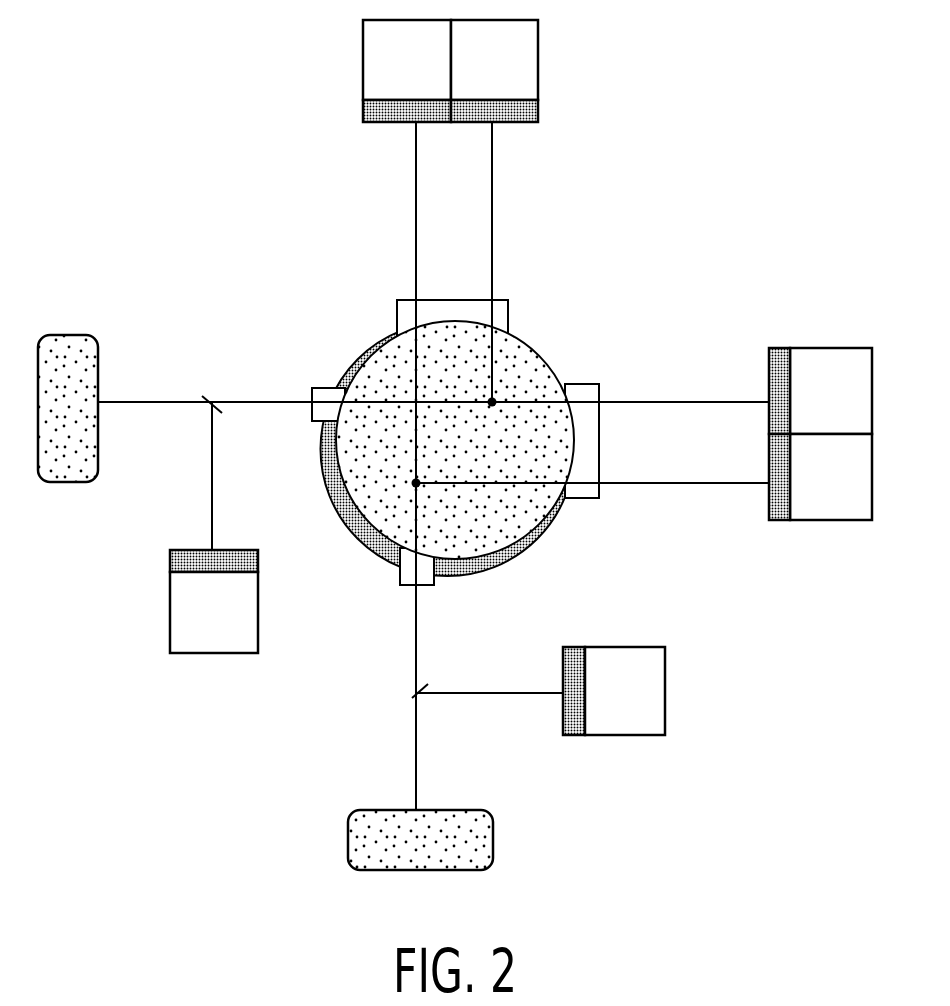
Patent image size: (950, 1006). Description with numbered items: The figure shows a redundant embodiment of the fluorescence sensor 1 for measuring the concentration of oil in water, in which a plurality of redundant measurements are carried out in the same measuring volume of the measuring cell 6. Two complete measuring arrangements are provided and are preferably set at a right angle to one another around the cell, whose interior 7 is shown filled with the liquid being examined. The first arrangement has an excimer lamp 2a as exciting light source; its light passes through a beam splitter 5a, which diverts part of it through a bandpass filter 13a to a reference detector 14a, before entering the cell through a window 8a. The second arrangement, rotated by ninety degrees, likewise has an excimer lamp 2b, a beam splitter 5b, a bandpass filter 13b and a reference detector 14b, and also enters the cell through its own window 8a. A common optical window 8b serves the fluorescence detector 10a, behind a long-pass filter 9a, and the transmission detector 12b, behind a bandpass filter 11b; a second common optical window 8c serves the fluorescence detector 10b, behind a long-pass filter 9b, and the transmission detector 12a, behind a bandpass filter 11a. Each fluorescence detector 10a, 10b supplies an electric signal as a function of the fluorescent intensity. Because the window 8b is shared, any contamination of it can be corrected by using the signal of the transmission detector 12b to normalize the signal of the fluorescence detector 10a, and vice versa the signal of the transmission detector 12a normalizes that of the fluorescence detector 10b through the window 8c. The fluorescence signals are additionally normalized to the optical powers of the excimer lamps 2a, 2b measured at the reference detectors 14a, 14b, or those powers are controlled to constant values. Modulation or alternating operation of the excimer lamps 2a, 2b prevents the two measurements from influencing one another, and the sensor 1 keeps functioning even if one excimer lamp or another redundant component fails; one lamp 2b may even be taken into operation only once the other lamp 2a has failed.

The fluorescence sensor 1 is at (267, 213).
The excimer lamp 2a is at (73, 338).
The excimer lamp 2b is at (417, 868).
The beam splitter 5a is at (207, 398).
The beam splitter 5b is at (410, 703).
The measuring cell 6 is at (345, 347).
The core 7 is at (539, 360).
The terminal 8a is at (313, 417).
The common optical window 8b is at (427, 307).
The common optical window 8c is at (592, 425).
The long-pass filter 9a is at (516, 122).
The long-pass filter 9b is at (777, 517).
The fluorescence detector 10a is at (511, 76).
The fluorescence detector 10b is at (847, 492).
The bandpass filter 11a is at (777, 355).
The bandpass filter 11b is at (390, 122).
The transmission detector 12a is at (847, 412).
The transmission detector 12b is at (425, 76).
The bandpass filter 13a is at (187, 557).
The bandpass filter 13b is at (575, 735).
The reference detector 14a is at (230, 626).
The reference detector 14b is at (640, 704).